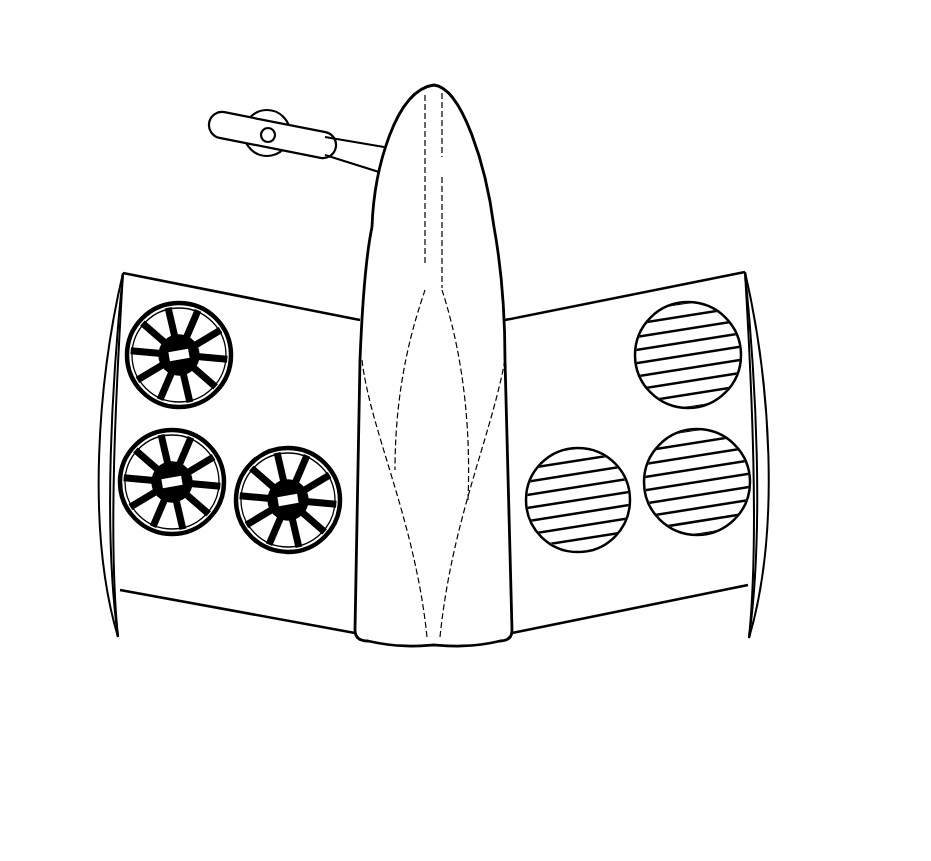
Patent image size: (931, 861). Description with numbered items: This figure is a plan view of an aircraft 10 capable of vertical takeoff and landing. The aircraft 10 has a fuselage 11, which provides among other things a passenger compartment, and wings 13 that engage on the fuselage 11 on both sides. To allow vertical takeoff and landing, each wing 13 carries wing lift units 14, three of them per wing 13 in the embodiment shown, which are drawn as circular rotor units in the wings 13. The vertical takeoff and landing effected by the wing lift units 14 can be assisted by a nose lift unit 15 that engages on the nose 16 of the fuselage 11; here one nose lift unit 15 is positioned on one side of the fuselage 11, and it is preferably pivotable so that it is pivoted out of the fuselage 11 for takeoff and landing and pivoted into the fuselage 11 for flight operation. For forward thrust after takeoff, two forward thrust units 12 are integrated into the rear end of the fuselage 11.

The aircraft 10 is at (570, 162).
The fuselage 11 is at (487, 243).
The forward thrust unit 12 is at (400, 652).
The wing 13 is at (287, 320).
The wing lift unit 14 is at (138, 307).
The nose lift unit 15 is at (313, 108).
The nose 16 is at (463, 115).